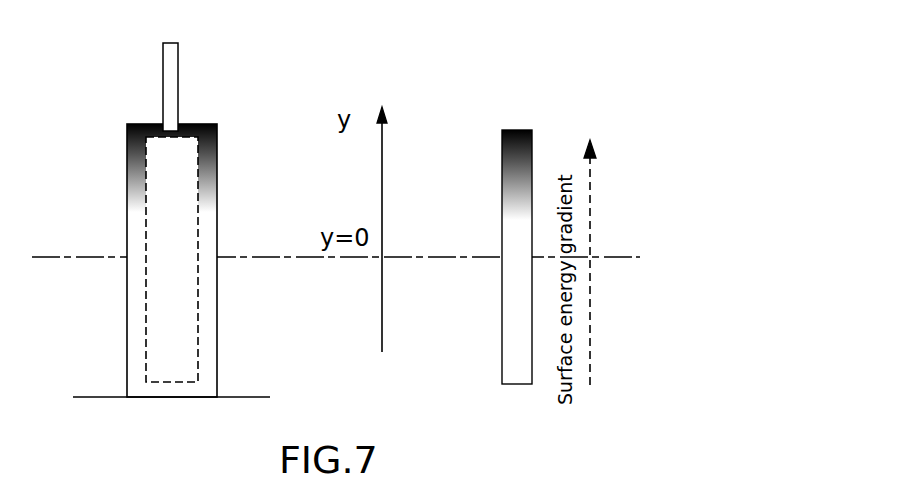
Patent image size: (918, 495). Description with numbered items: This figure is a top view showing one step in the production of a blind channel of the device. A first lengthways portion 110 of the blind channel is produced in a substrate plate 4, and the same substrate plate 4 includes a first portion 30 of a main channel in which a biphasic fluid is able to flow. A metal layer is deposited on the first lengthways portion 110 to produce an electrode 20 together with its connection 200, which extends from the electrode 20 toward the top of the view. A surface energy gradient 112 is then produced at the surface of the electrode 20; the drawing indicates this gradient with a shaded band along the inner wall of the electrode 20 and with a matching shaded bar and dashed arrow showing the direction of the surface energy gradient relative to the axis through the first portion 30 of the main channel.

The substrate plate 4 is at (103, 377).
The electrode 20 is at (157, 327).
The first portion of a main channel 30 is at (227, 417).
The first lengthways portion of a blind channel 110 is at (217, 225).
The surface energy gradient 112 is at (198, 168).
The connection 200 is at (168, 82).